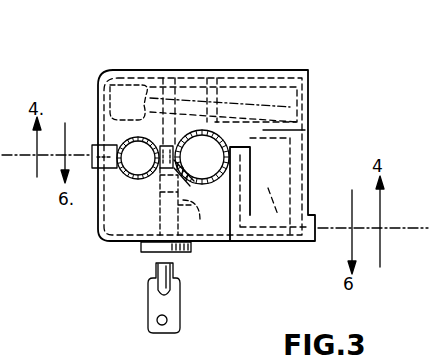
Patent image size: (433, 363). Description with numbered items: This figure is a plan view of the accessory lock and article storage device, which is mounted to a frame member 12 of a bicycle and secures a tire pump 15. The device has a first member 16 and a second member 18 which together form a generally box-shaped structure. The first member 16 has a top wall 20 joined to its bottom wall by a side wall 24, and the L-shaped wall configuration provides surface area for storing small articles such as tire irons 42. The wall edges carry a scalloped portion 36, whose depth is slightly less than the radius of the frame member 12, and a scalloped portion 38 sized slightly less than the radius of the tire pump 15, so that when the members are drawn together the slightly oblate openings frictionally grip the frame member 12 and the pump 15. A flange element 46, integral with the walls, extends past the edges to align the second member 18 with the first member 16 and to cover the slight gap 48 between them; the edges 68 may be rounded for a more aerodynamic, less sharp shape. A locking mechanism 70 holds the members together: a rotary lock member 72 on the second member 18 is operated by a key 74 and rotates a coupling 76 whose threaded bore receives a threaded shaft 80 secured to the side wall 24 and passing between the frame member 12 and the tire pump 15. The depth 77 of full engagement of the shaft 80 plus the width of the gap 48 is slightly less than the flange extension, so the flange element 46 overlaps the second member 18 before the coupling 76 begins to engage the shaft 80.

The frame member 12 is at (244, 199).
The tire pump 15 is at (127, 180).
The first member 16 is at (283, 69).
The second member 18 is at (117, 247).
The top wall 20 is at (305, 133).
The side wall 24 is at (309, 97).
The scalloped portion 36 is at (221, 132).
The scalloped portion 38 is at (141, 137).
The tire irons 42 is at (214, 118).
The flange element 46 is at (94, 150).
The gap 48 is at (269, 172).
The edges 68 is at (104, 72).
The locking mechanism 70 is at (145, 253).
The rotary lock member 72 is at (178, 222).
The key 74 is at (168, 305).
The coupling 76 is at (184, 212).
The depth 77 is at (202, 157).
The threaded shaft 80 is at (139, 201).